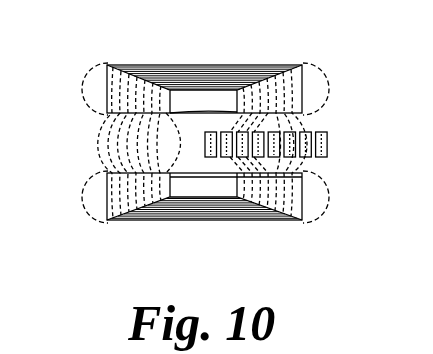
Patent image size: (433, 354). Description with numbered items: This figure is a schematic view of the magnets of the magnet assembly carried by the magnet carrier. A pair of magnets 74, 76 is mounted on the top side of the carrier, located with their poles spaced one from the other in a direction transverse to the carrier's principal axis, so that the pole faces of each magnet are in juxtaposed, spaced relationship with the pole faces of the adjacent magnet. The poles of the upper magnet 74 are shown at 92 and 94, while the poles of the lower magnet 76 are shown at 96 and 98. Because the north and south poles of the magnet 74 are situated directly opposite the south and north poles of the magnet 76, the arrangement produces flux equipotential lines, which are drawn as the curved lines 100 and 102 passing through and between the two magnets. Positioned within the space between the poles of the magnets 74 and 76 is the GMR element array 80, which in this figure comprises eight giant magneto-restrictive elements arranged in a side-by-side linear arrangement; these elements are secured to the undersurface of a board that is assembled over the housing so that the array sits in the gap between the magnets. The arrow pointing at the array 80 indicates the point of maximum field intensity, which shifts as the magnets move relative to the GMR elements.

The magnet 74 is at (277, 63).
The magnet 76 is at (286, 221).
The GMR element array 80 is at (333, 140).
The pole 92 is at (133, 114).
The pole 94 is at (302, 115).
The pole 96 is at (129, 173).
The pole 98 is at (302, 177).
The flux equipotential lines 100 is at (180, 173).
The flux equipotential lines 102 is at (243, 128).